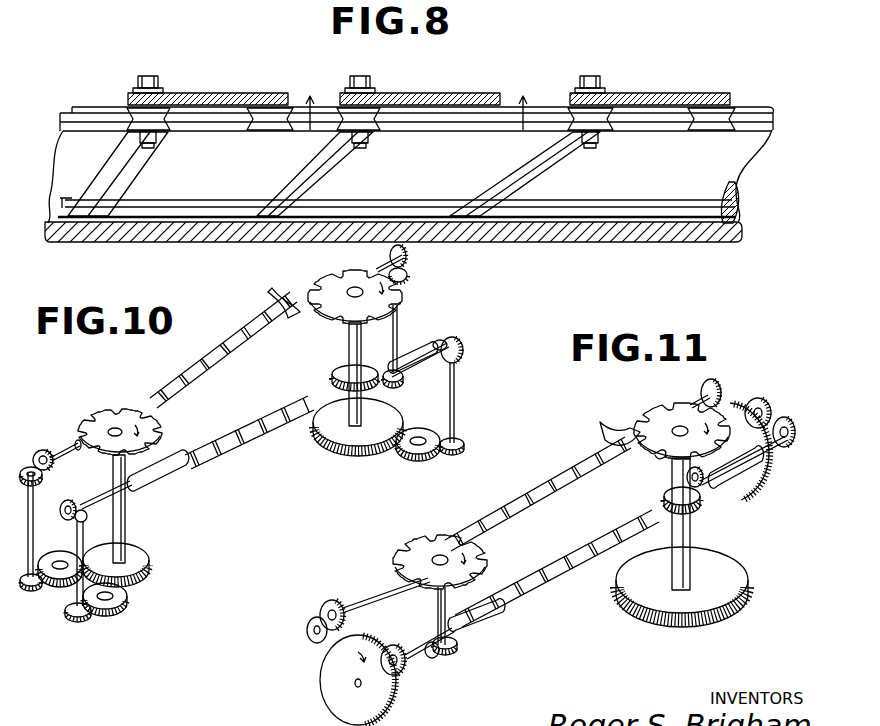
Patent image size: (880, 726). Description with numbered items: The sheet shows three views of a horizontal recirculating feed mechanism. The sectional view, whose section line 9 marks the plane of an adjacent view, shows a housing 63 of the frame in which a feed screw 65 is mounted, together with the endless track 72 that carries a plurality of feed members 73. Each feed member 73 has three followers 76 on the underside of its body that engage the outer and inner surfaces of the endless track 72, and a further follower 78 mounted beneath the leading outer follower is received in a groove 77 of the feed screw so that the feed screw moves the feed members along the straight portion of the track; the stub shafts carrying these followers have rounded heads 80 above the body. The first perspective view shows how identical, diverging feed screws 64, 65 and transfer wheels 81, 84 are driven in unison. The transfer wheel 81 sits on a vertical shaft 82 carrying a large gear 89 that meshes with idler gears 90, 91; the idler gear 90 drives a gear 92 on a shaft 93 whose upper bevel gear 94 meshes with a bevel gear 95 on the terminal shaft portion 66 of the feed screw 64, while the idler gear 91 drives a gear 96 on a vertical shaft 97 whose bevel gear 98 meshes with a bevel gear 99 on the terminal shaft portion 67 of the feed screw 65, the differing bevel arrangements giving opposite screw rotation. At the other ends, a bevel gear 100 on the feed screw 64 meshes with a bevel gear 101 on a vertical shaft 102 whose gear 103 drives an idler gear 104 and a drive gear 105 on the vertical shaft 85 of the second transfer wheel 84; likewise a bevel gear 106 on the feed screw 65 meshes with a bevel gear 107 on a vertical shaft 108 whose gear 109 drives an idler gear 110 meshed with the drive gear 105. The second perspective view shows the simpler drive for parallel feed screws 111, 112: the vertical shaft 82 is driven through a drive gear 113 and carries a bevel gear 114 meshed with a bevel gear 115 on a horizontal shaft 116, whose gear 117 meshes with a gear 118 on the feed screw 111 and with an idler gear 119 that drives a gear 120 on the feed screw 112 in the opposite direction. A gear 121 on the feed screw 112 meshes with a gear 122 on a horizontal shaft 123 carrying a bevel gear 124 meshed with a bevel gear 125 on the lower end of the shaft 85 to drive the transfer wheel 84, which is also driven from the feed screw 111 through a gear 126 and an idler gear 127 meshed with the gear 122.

In FIG. 8, the section line 9 is at (415, 99).
In FIG. 8, the housing 63 is at (672, 234).
In FIG. 10, the feed screw 64 is at (237, 346).
In FIG. 8, the feed screw 65 is at (597, 220).
In FIG. 10, the feed screw 65 is at (220, 443).
In FIG. 10, the terminal shaft portions 66 is at (380, 267).
In FIG. 10, the terminal shaft portions 67 is at (438, 344).
In FIG. 11, the terminal shaft portions 67 is at (744, 462).
In FIG. 8, the endless track 72 is at (757, 104).
In FIG. 8, the feed member 73 is at (245, 84).
In FIG. 8, the followers 76 is at (165, 128).
In FIG. 8, the groove 77 is at (540, 178).
In FIG. 8, the follower 78 is at (583, 142).
In FIG. 8, the rounded head 80 is at (160, 80).
In FIG. 10, the transfer wheel 81 is at (340, 323).
In FIG. 11, the transfer wheel 81 is at (668, 455).
In FIG. 10, the vertical shaft 82 is at (348, 355).
In FIG. 11, the vertical shaft 82 is at (691, 545).
In FIG. 10, the second transfer wheel 84 is at (152, 418).
In FIG. 11, the second transfer wheel 84 is at (488, 560).
In FIG. 10, the vertical shaft 85 is at (126, 512).
In FIG. 11, the vertical shaft 85 is at (436, 610).
In FIG. 10, the large gear 89 is at (342, 448).
In FIG. 10, the idler gear 90 is at (365, 368).
In FIG. 10, the idler gear 91 is at (420, 432).
In FIG. 10, the gear 92 is at (405, 384).
In FIG. 10, the shaft 93 is at (398, 325).
In FIG. 10, the bevel gear 94 is at (408, 277).
In FIG. 10, the bevel gear 95 is at (408, 257).
In FIG. 10, the gear 96 is at (466, 443).
In FIG. 10, the vertical shaft 97 is at (456, 393).
In FIG. 10, the bevel gear 98 is at (464, 350).
In FIG. 10, the bevel gear 99 is at (447, 342).
In FIG. 10, the bevel gear 100 is at (43, 451).
In FIG. 10, the bevel gear 101 is at (39, 475).
In FIG. 10, the vertical shaft 102 is at (34, 530).
In FIG. 10, the gear 103 is at (32, 589).
In FIG. 10, the idler gear 104 is at (56, 579).
In FIG. 10, the drive gear 105 is at (146, 553).
In FIG. 10, the bevel gear 106 is at (65, 504).
In FIG. 10, the bevel gear 107 is at (100, 518).
In FIG. 10, the vertical shaft 108 is at (83, 533).
In FIG. 10, the gear 109 is at (80, 618).
In FIG. 10, the idler gear 110 is at (129, 598).
In FIG. 11, the feed screw 111 is at (526, 492).
In FIG. 11, the feed screw 112 is at (573, 556).
In FIG. 11, the drive gear 113 is at (722, 565).
In FIG. 11, the bevel gear 114 is at (690, 504).
In FIG. 11, the bevel gear 115 is at (701, 485).
In FIG. 11, the horizontal shaft 116 is at (720, 434).
In FIG. 11, the gear 117 is at (733, 408).
In FIG. 11, the gear 118 is at (716, 384).
In FIG. 11, the idler gear 119 is at (766, 403).
In FIG. 11, the gear 120 is at (787, 425).
In FIG. 11, the gear 121 is at (397, 647).
In FIG. 11, the gear 122 is at (397, 700).
In FIG. 11, the horizontal shaft 123 is at (428, 655).
In FIG. 11, the bevel gear 124 is at (437, 655).
In FIG. 11, the bevel gear 125 is at (458, 645).
In FIG. 11, the gear 126 is at (340, 600).
In FIG. 11, the idler gear 127 is at (306, 637).